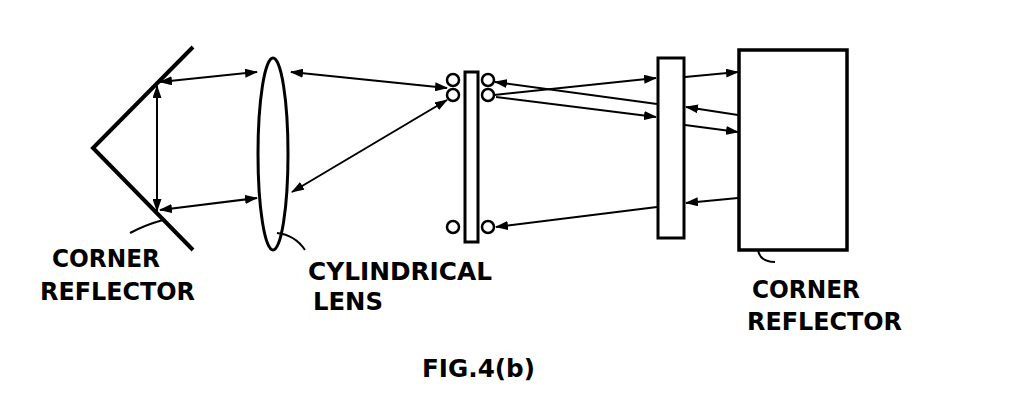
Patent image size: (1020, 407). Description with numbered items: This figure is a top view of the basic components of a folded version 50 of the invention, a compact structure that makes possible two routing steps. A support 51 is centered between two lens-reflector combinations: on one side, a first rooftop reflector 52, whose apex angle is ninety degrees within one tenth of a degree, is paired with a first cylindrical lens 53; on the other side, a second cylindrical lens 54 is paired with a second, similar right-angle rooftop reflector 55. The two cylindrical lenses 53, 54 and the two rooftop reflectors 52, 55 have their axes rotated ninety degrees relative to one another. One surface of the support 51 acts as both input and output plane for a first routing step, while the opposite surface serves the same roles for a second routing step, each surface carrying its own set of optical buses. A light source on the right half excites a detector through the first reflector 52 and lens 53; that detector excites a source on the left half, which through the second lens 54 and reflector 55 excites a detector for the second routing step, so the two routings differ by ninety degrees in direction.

The folded version 50 is at (625, 315).
The support 51 is at (467, 70).
The first rooftop reflector 52 is at (797, 49).
The first cylindrical lens 53 is at (643, 124).
The second cylindrical lens 54 is at (273, 57).
The second rooftop reflector 55 is at (175, 60).